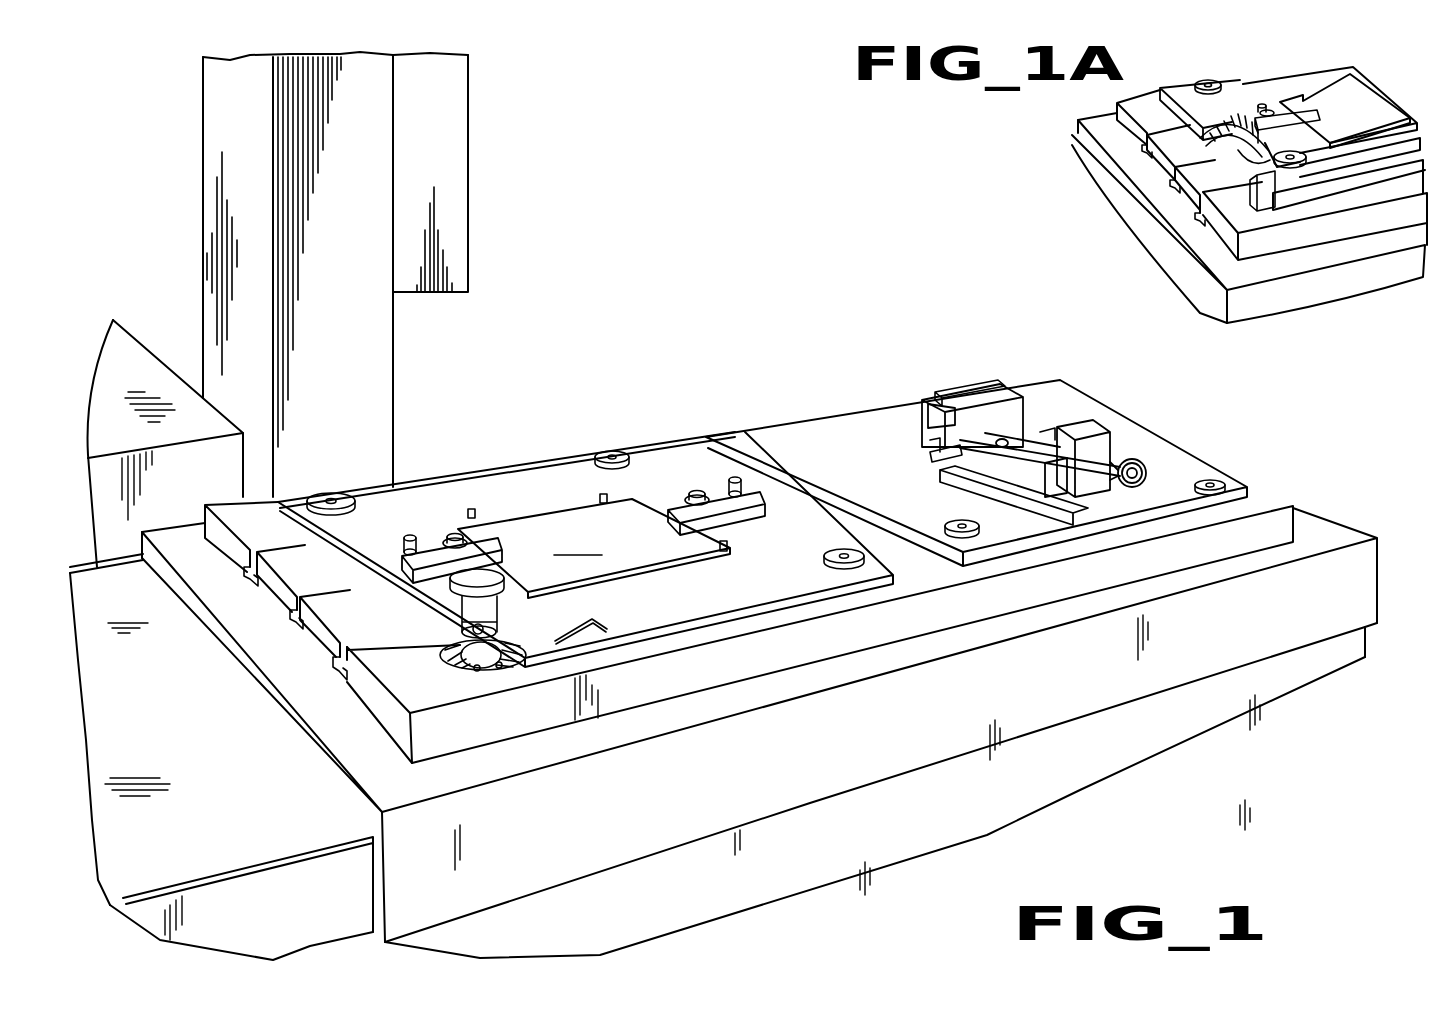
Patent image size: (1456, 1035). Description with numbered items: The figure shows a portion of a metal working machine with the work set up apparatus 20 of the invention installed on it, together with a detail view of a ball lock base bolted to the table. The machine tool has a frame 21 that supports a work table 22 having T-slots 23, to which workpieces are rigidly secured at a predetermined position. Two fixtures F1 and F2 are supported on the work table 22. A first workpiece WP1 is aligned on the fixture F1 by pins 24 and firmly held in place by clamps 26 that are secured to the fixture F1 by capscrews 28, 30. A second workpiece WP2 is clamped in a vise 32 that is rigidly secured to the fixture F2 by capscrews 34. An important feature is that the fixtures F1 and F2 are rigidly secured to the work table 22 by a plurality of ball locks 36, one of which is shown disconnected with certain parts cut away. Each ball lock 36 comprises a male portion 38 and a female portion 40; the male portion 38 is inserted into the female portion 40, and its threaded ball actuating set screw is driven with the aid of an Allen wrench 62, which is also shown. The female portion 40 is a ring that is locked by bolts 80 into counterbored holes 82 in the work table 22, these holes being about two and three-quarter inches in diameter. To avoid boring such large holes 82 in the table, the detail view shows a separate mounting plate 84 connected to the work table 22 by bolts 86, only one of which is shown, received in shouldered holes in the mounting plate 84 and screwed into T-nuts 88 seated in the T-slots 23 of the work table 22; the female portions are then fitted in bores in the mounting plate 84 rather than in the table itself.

In FIG. 1, the work set up apparatus 20 is at (686, 301).
In FIG. 1, the frame 21 is at (388, 792).
In FIG. 1, the work table 22 is at (249, 499).
In FIG. 1A, the work table 22 is at (1115, 127).
In FIG. 1, the T-slots 23 is at (350, 677).
In FIG. 1A, the T-slots 23 is at (1203, 215).
In FIG. 1, the pins 24 is at (603, 499).
In FIG. 1, the clamps 26 is at (448, 574).
In FIG. 1, the capscrews 28 is at (450, 534).
In FIG. 1, the capscrews 30 is at (400, 540).
In FIG. 1, the vise 32 is at (1020, 405).
In FIG. 1, the capscrews 34 is at (1045, 432).
In FIG. 1, the ball locks 36 is at (333, 493).
In FIG. 1A, the ball locks 36 is at (1193, 78).
In FIG. 1, the male portion 38 is at (492, 629).
In FIG. 1, the female portion 40 is at (446, 656).
In FIG. 1, the Allen wrench 62 is at (612, 620).
In FIG. 1, the bolts 80 is at (474, 671).
In FIG. 1, the counterbored holes 82 is at (499, 669).
In FIG. 1A, the mounting plate 84 is at (1163, 95).
In FIG. 1A, the bolts 86 is at (1252, 128).
In FIG. 1A, the T-nuts 88 is at (1277, 150).
In FIG. 1, the fixture F1 is at (498, 482).
In FIG. 1A, the fixture F1 is at (1310, 78).
In FIG. 1, the fixture F2 is at (866, 432).
In FIG. 1, the first workpiece WP1 is at (594, 548).
In FIG. 1A, the first workpiece WP1 is at (1383, 100).
In FIG. 1, the second workpiece WP2 is at (962, 392).